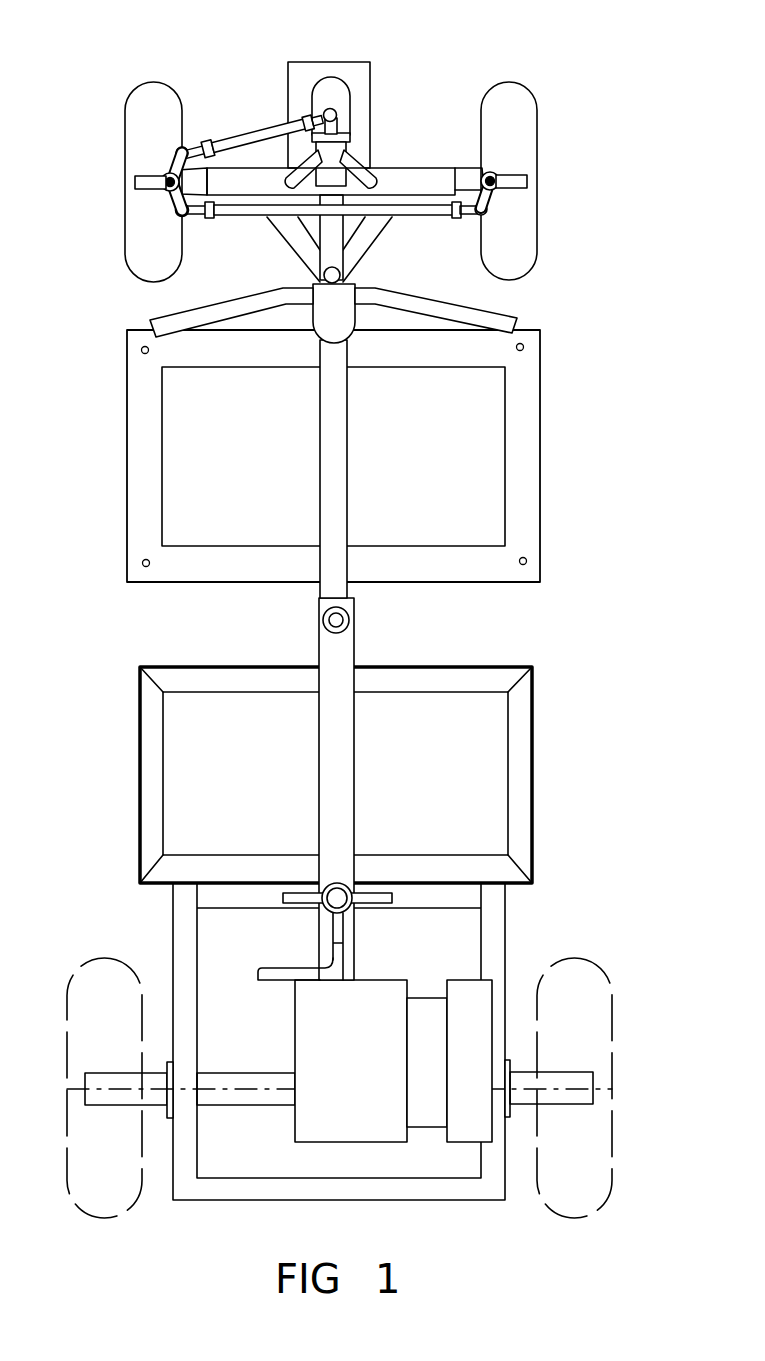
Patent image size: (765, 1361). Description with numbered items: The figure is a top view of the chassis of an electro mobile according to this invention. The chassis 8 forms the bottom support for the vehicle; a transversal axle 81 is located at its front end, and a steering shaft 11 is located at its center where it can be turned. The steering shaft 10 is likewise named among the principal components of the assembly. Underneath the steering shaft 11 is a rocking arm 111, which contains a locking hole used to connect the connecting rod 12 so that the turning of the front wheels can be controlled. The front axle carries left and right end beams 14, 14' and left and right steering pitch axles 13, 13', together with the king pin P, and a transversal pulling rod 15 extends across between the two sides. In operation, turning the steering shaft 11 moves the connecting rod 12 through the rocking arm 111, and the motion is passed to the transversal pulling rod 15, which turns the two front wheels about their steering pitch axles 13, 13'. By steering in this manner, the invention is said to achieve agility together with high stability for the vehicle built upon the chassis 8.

The chassis 8 is at (525, 480).
The steering shaft 10 is at (467, 317).
The steering shaft 11 is at (328, 240).
The connecting rod 12 is at (277, 123).
The left steering pitch axle 13 is at (133, 155).
The right steering pitch axle 13' is at (550, 160).
The left end beam of front axle 14 is at (185, 104).
The right end beam of front axle 14' is at (479, 109).
The transversal pulling rod 15 is at (452, 215).
The transversal axle 81 is at (442, 180).
The rocking arm 111 is at (336, 117).
The king pin P is at (165, 188).